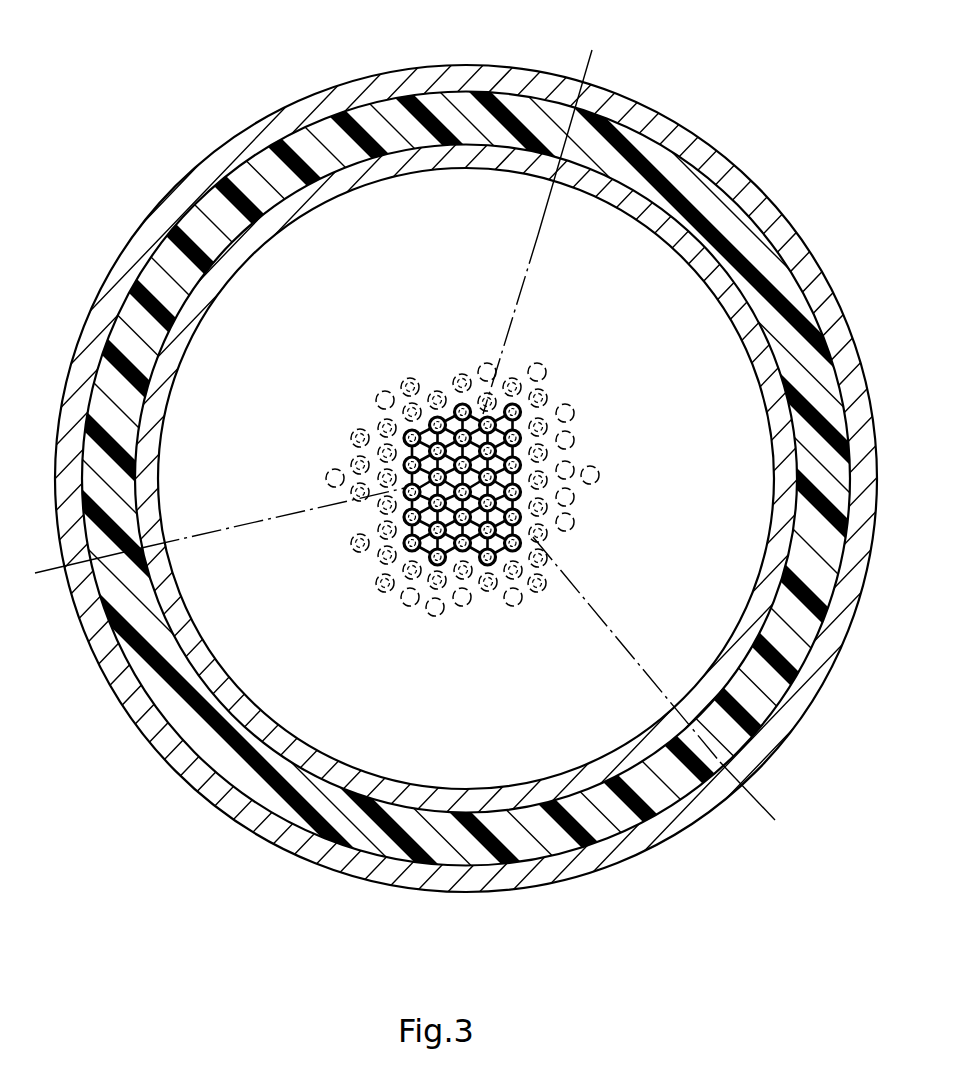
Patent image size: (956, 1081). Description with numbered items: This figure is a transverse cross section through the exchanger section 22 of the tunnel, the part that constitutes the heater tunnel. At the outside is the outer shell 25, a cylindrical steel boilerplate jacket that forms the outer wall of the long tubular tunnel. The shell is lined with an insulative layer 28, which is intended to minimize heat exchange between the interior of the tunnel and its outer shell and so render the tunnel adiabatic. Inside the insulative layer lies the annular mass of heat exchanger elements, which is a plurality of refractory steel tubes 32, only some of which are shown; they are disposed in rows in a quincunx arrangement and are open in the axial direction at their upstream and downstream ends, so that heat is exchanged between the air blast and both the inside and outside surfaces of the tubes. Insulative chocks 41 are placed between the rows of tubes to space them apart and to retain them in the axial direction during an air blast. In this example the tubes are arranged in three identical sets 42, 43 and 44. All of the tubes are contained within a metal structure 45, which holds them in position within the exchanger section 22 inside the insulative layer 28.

The exchanger section 22 is at (168, 190).
The outer shell 25 is at (556, 873).
The insulative layer 28 is at (608, 825).
The refractory steel tubes 32 is at (460, 407).
The insulative chocks 41 is at (540, 535).
The first set of tubes 42 is at (265, 700).
The second set of tubes 43 is at (295, 222).
The third set of tubes 44 is at (658, 247).
The metal structure 45 is at (498, 147).